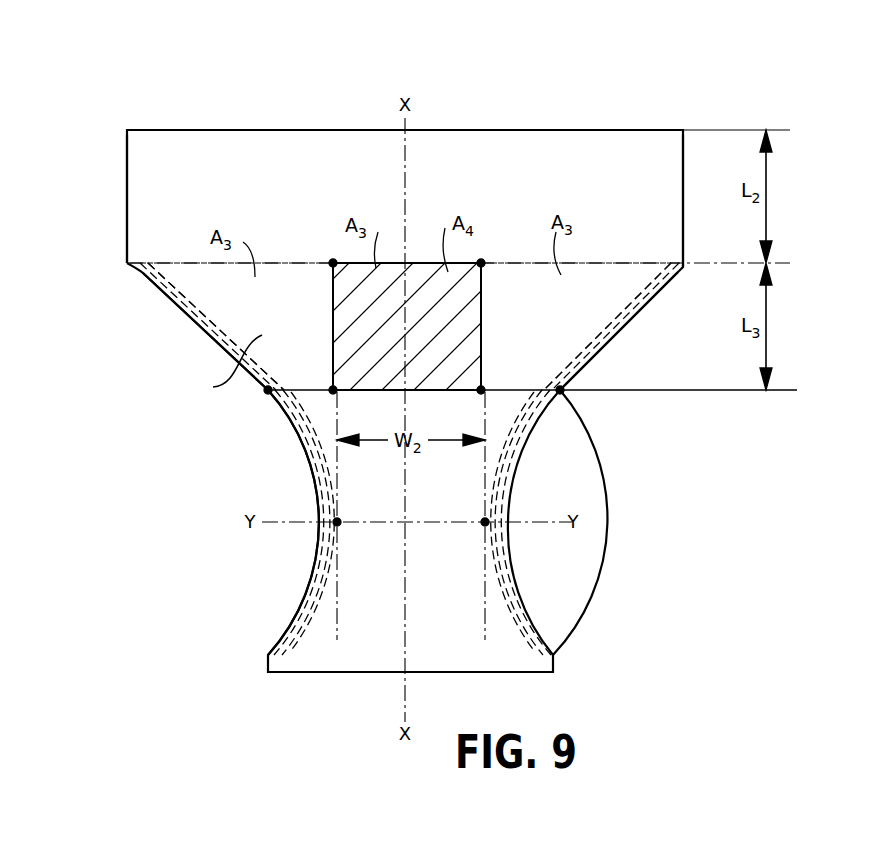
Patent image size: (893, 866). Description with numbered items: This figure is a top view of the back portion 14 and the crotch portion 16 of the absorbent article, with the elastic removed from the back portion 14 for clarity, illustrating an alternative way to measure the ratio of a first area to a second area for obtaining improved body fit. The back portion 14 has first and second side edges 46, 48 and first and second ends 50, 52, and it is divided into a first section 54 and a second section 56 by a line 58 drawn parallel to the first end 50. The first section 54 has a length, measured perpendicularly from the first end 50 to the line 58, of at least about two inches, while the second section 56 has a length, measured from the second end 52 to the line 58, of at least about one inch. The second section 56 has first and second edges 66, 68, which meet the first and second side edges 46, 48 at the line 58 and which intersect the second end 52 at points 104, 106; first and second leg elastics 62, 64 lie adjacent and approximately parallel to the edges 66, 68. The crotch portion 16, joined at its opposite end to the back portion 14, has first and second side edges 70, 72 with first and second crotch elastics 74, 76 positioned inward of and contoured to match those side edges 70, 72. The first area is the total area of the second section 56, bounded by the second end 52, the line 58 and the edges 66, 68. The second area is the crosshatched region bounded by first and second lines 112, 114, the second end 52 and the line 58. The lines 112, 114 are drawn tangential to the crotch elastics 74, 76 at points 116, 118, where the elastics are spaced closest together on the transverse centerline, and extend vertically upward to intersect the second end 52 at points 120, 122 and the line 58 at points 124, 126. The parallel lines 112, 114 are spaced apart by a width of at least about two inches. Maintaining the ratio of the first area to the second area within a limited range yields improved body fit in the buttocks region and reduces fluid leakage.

The back portion 14 is at (100, 72).
The crotch portion 16 is at (588, 561).
The first side edge 46 is at (127, 205).
The second side edge 48 is at (683, 197).
The first end 50 is at (518, 130).
The second end 52 is at (560, 383).
The first section 54 is at (600, 136).
The second section 56 is at (618, 282).
The line 58 is at (578, 262).
The first leg elastic 62 is at (186, 305).
The second leg elastic 64 is at (622, 326).
The first edge 66 is at (210, 335).
The second edge 68 is at (652, 301).
The first side edge 70 is at (318, 583).
The second side edge 72 is at (518, 597).
The first crotch elastic 74 is at (322, 460).
The second crotch elastic 76 is at (500, 470).
The point 104 is at (262, 393).
The point 106 is at (562, 394).
The first line 112 is at (333, 308).
The second line 114 is at (481, 322).
The point 116 is at (337, 521).
The point 118 is at (485, 521).
The point 120 is at (333, 389).
The point 122 is at (481, 389).
The point 124 is at (333, 262).
The point 126 is at (481, 262).